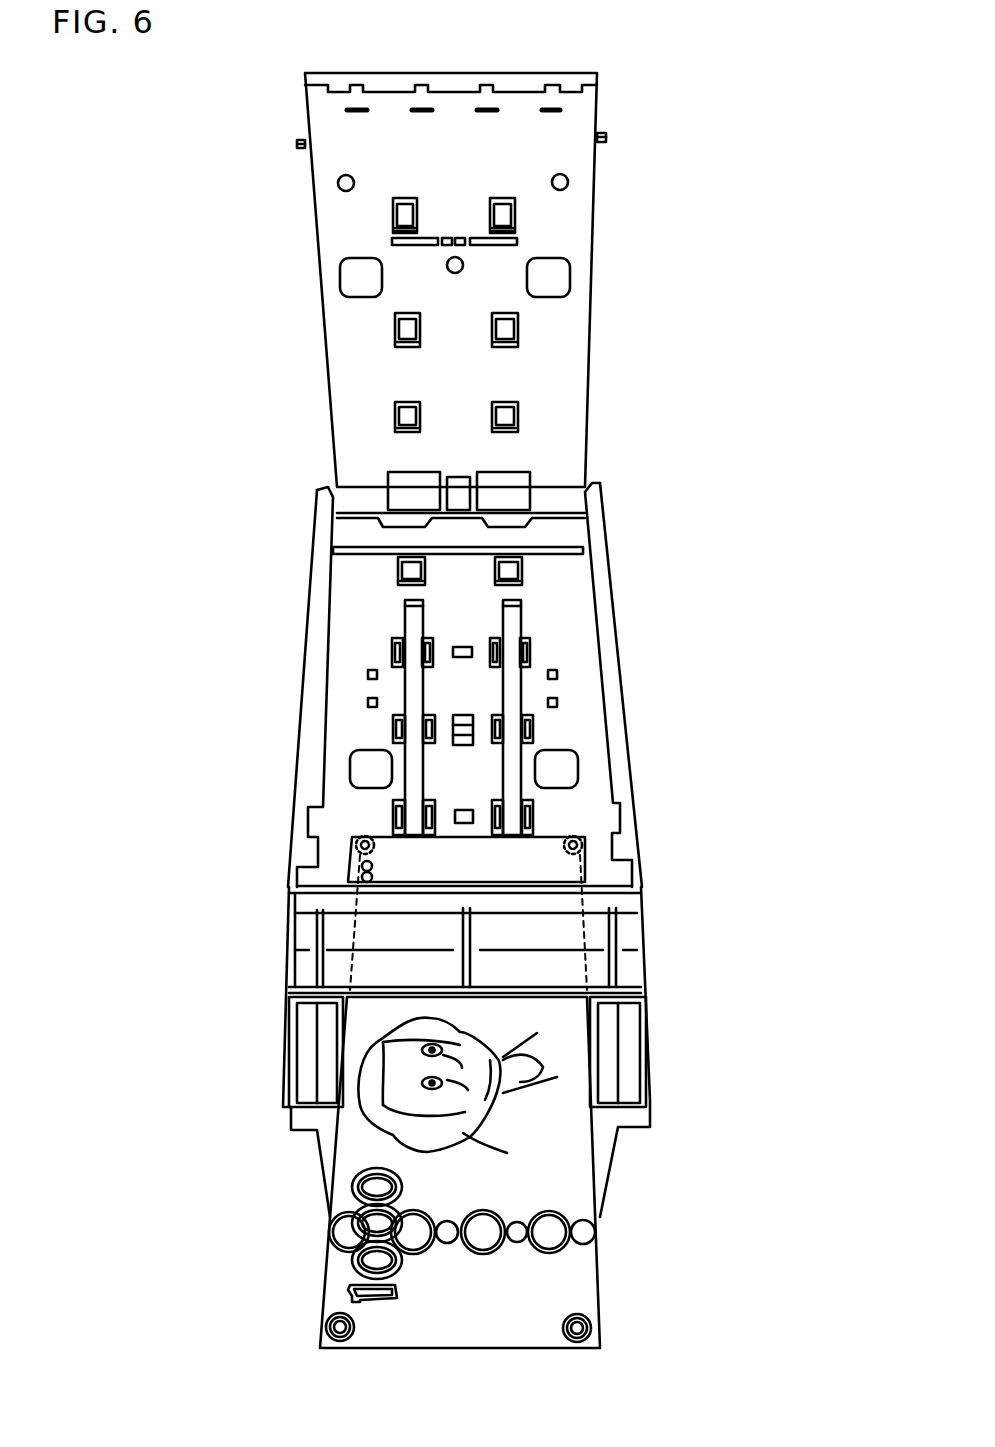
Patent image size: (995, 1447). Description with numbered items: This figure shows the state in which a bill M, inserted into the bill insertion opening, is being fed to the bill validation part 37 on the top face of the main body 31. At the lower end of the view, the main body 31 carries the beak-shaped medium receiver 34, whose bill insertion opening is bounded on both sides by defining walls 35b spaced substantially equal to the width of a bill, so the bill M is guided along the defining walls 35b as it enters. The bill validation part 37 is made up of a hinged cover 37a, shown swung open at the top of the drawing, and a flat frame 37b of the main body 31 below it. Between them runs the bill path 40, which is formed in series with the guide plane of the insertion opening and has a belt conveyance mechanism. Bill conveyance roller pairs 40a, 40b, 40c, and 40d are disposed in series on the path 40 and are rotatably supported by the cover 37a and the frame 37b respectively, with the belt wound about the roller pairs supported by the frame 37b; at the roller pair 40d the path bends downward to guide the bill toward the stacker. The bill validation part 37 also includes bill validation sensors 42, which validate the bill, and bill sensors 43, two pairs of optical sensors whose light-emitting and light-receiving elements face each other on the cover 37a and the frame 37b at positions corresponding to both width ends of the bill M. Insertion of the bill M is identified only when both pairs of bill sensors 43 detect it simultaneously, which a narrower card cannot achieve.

The main body 31 is at (632, 903).
The medium receiver 34 is at (305, 950).
The defining walls 35b is at (327, 1072).
The bill validation part 37 is at (600, 214).
The hinged cover 37a is at (307, 119).
The flat frame 37b is at (347, 645).
The bill path 40 is at (360, 548).
The bill conveyance roller pair 40a is at (407, 205).
The bill conveyance roller pair 40b is at (407, 345).
The bill conveyance roller pair 40c is at (407, 430).
The bill conveyance roller pair 40d is at (497, 572).
The bill validation sensors 42 is at (552, 273).
The bill sensors 43 is at (562, 182).
The bill M is at (550, 1175).